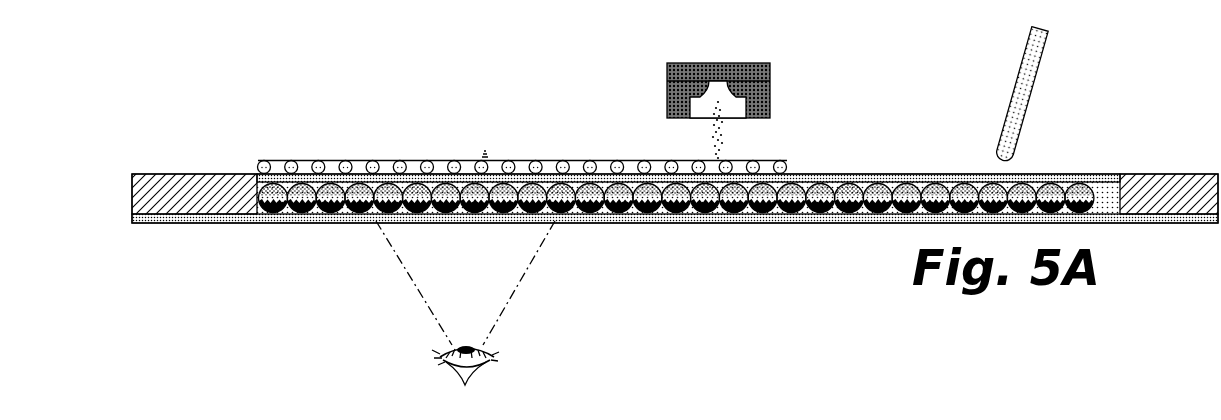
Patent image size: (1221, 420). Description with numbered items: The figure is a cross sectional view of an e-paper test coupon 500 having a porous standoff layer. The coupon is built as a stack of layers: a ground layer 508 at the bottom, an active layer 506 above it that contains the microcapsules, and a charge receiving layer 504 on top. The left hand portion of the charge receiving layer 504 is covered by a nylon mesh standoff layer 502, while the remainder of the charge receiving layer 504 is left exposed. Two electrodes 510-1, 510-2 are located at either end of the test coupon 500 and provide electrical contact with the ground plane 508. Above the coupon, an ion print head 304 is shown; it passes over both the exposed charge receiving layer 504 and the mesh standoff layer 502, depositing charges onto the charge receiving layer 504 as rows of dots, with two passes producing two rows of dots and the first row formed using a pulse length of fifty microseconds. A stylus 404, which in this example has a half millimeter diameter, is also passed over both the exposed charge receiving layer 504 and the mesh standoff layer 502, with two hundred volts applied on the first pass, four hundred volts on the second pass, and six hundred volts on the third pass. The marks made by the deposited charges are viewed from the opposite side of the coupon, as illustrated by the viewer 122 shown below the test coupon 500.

The test coupon 500 is at (178, 118).
The nylon mesh standoff layer 502 is at (438, 159).
The charge receiving layer 504 is at (840, 178).
The active layer 506 is at (658, 210).
The ground layer 508 is at (820, 224).
The electrode 510-1 is at (222, 204).
The electrode 510-2 is at (1207, 204).
The ion print head 304 is at (690, 63).
The stylus 404 is at (1018, 128).
The viewer 122 is at (483, 367).